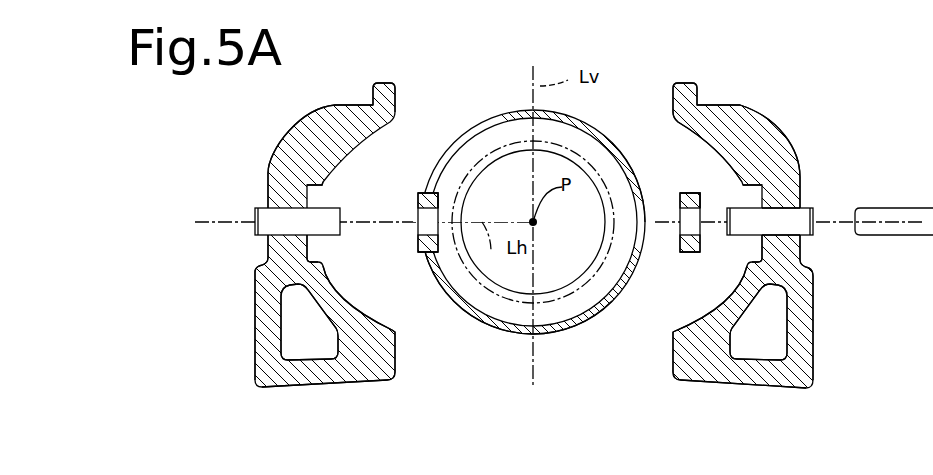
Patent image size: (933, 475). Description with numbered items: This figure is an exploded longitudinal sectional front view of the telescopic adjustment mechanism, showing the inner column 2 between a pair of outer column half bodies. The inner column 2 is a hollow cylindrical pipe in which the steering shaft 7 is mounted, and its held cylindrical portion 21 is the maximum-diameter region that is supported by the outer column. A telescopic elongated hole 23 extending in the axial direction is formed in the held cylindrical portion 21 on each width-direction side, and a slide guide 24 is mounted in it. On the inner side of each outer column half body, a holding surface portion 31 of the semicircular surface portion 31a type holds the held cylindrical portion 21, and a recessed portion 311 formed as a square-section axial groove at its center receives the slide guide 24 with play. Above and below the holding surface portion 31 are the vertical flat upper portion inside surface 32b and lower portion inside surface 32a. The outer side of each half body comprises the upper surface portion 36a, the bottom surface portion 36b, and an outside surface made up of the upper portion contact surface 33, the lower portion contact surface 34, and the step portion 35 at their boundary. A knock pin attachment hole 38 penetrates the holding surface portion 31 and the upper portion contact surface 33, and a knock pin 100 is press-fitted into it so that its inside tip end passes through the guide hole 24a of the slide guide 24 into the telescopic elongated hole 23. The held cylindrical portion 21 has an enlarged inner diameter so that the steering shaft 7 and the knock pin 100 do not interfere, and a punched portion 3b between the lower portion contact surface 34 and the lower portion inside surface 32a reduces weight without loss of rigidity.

The inner column 2 is at (500, 105).
The held cylindrical portion 21 is at (458, 306).
The telescopic elongated hole 23 is at (645, 211).
The steering shaft 7 is at (567, 297).
The slide guide 24 is at (419, 250).
The guide hole 24a is at (417, 208).
The knock pin 100 is at (320, 212).
The knock pin attachment hole 38 is at (790, 232).
The upper surface portion 36a is at (293, 136).
The upper portion inside surface 32b is at (397, 98).
The upper portion contact surface 33 is at (268, 192).
The holding surface portion 31 is at (707, 130).
The recessed portion 311 is at (320, 259).
The step portion 35 is at (262, 262).
The lower portion contact surface 34 is at (254, 317).
The punched portion 3b is at (291, 332).
The bottom surface portion 36b is at (295, 387).
The lower portion inside surface 32a is at (395, 356).
The semicircular surface portion 31a is at (375, 318).